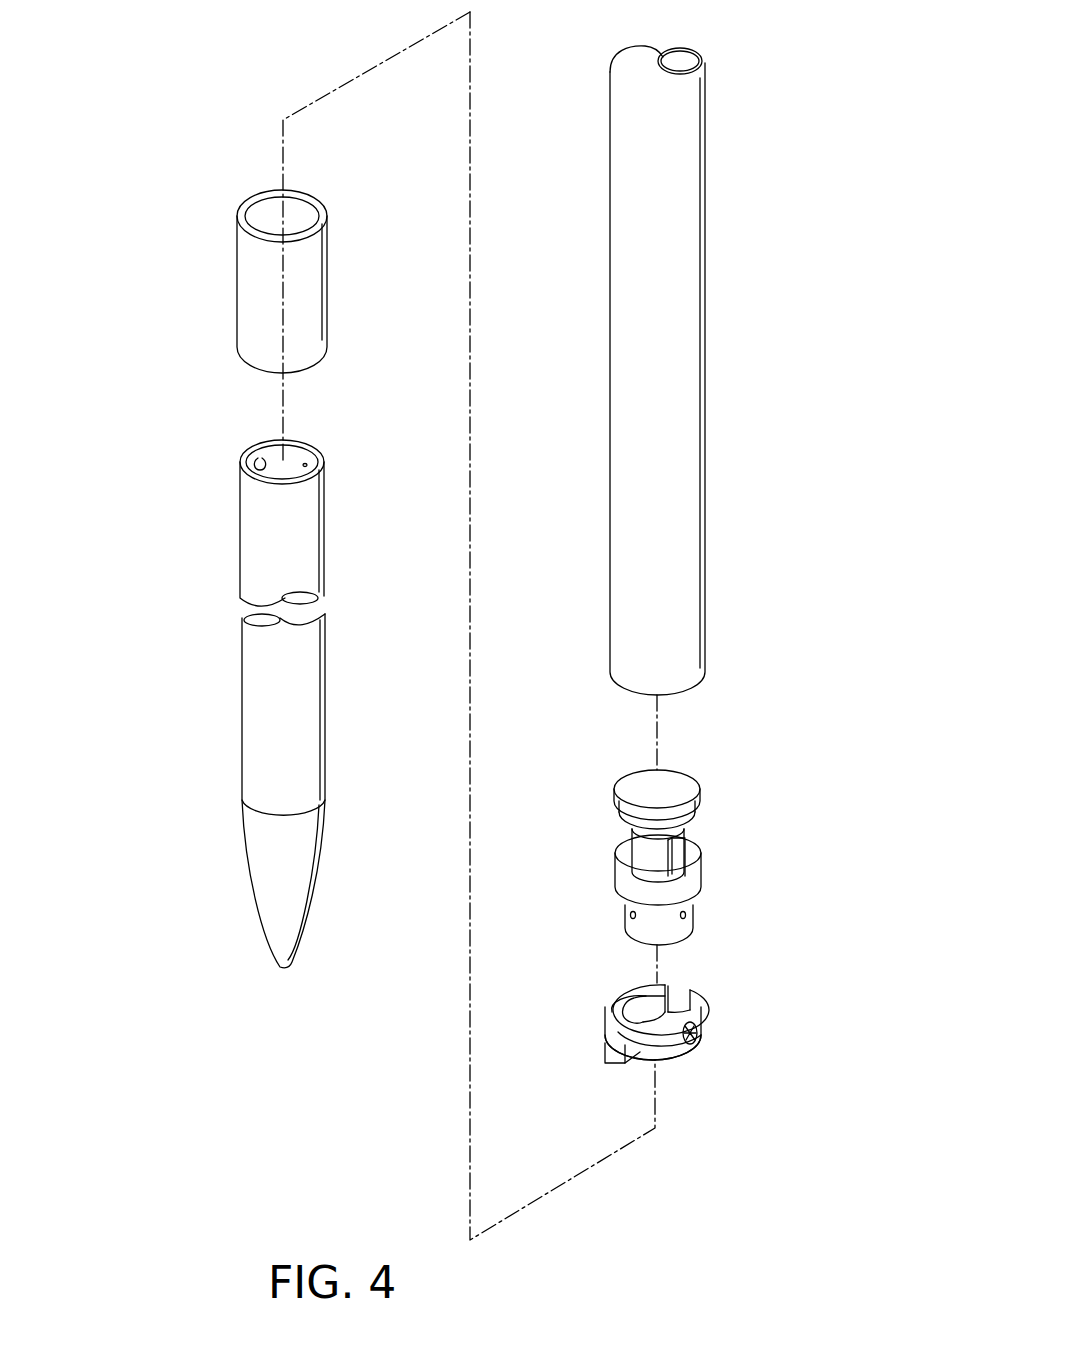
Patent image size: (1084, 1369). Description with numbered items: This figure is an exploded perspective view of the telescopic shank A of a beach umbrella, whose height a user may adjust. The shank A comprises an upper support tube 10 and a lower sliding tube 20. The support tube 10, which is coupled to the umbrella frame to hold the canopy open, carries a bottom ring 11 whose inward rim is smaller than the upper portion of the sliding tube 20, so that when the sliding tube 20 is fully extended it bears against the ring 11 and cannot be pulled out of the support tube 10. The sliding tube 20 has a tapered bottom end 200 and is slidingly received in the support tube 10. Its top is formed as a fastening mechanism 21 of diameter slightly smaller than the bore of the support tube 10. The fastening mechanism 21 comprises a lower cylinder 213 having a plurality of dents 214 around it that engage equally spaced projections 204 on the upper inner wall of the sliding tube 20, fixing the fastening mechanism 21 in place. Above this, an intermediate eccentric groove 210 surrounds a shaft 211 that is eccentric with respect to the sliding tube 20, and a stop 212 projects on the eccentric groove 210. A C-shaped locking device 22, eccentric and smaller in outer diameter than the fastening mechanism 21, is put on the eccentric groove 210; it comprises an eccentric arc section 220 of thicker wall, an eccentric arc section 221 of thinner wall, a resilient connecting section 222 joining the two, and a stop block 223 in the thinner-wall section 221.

The telescopic shank A is at (735, 482).
The upper support tube 10 is at (685, 617).
The bottom ring 11 is at (313, 290).
The lower sliding tube 20 is at (241, 691).
The projections 204 is at (262, 462).
The tapered bottom end 200 is at (268, 878).
The fastening mechanism 21 is at (713, 826).
The eccentric groove 210 is at (626, 832).
The shaft 211 is at (651, 850).
The stop 212 is at (686, 857).
The lower cylinder 213 is at (680, 936).
The dents 214 is at (632, 919).
The C-shaped locking device 22 is at (713, 1022).
The eccentric arc section of thicker wall 220 is at (622, 1064).
The eccentric arc section of thinner wall 221 is at (672, 1048).
The resilient connecting section 222 is at (606, 1024).
The stop block 223 is at (700, 1048).